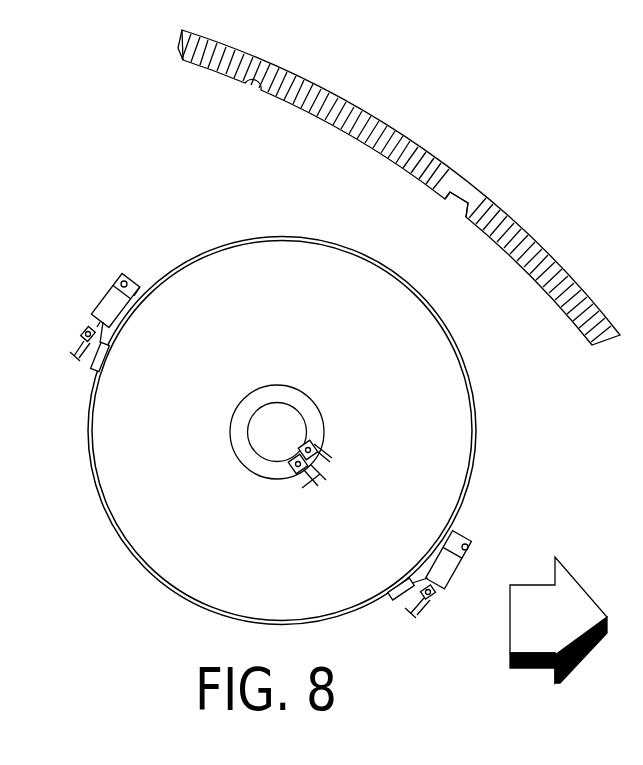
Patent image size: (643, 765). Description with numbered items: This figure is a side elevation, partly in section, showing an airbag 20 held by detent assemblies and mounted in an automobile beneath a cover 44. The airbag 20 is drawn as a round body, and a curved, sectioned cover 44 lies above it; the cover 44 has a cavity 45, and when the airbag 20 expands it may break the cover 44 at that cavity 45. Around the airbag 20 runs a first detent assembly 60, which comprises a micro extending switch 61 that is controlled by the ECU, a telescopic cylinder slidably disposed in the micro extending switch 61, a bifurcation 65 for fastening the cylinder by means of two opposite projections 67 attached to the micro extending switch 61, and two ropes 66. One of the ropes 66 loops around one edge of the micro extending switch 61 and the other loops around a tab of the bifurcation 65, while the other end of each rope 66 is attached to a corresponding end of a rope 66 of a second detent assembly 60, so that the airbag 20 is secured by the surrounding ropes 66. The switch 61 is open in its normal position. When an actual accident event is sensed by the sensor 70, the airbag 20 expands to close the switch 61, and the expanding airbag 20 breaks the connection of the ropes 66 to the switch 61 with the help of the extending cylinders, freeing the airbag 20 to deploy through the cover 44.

The airbag 20 is at (263, 262).
The cover 44 is at (362, 122).
The cavity 45 is at (472, 199).
The first detent assembly 60 is at (162, 261).
The micro extending switch 61 is at (112, 303).
The bifurcation 65 is at (126, 278).
The ropes 66 is at (143, 290).
The projections 67 is at (115, 287).
The sensor 70 is at (267, 437).